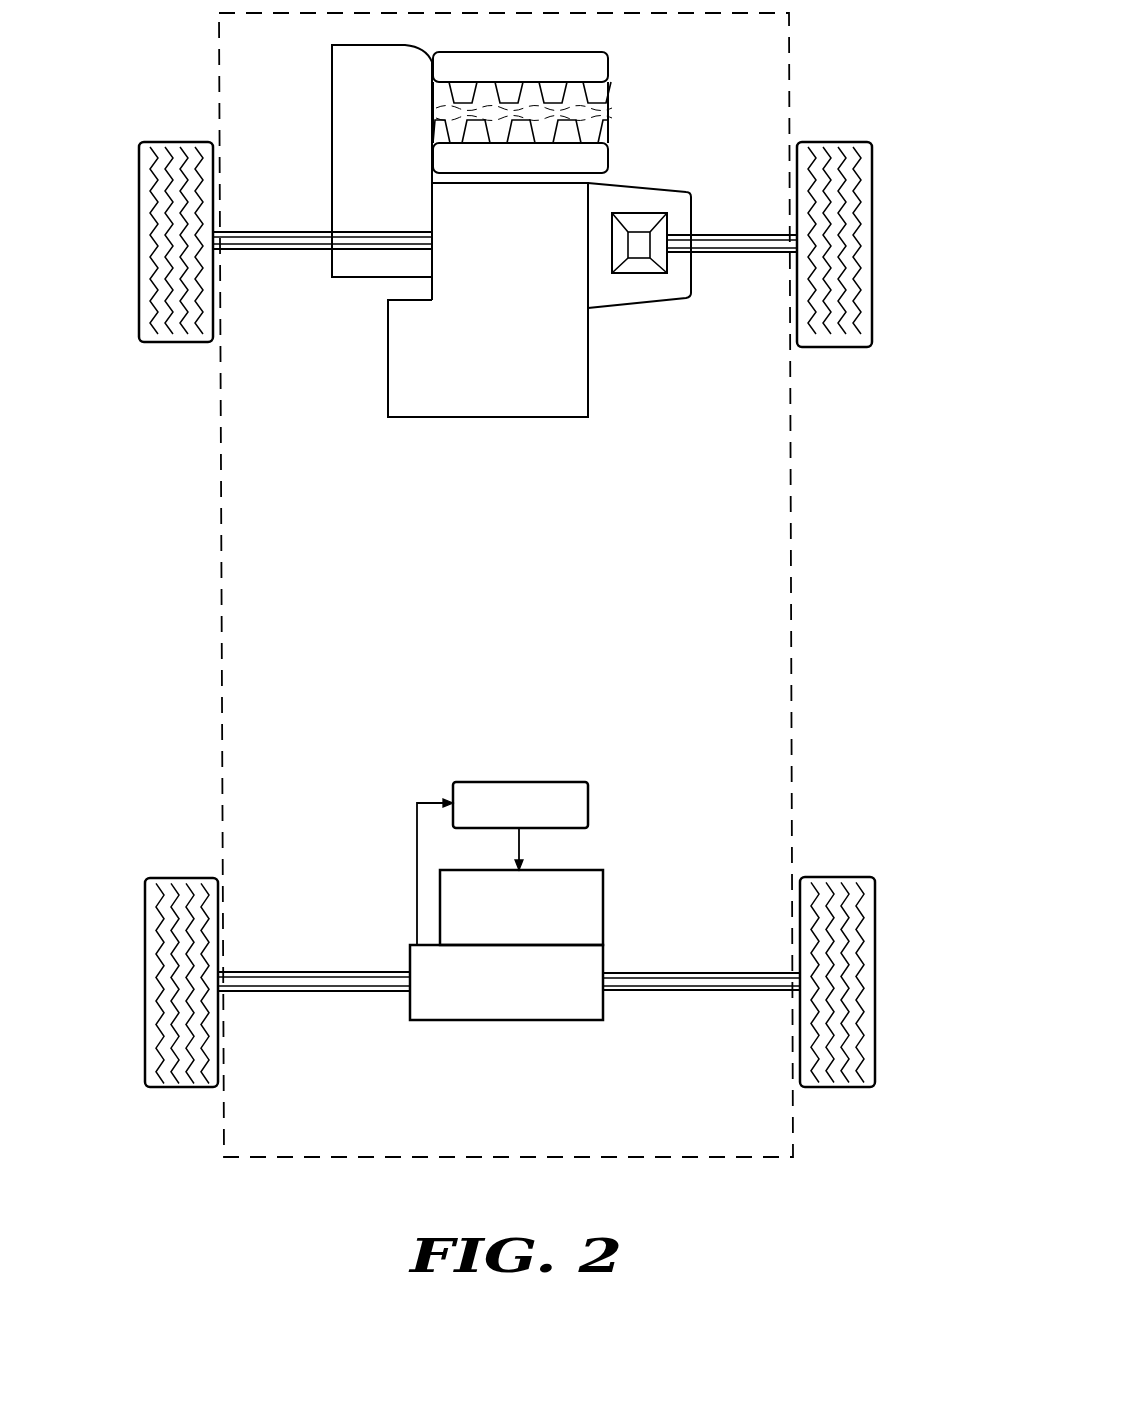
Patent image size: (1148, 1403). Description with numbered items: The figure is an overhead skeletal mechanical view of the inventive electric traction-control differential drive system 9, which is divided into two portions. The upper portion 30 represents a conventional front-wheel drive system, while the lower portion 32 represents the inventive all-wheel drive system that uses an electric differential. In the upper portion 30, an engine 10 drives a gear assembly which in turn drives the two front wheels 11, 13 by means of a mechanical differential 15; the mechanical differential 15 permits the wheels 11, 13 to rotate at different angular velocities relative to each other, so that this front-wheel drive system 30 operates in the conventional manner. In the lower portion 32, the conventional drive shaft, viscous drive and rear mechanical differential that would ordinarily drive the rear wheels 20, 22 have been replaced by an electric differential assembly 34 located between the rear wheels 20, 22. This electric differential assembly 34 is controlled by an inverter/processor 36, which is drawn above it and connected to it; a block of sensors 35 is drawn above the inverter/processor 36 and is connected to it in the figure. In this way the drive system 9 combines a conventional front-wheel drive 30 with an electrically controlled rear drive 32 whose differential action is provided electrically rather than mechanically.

The electric traction-control differential drive system 9 is at (789, 595).
The engine 10 is at (608, 90).
The wheel 11 is at (172, 142).
The wheel 13 is at (830, 142).
The mechanical differential 15 is at (640, 213).
The wheel 20 is at (178, 878).
The wheel 22 is at (833, 877).
The upper portion 30 is at (704, 103).
The lower portion 32 is at (355, 895).
The electric differential assembly 34 is at (505, 1020).
The sensors 35 is at (516, 782).
The inverter/processor 36 is at (603, 905).